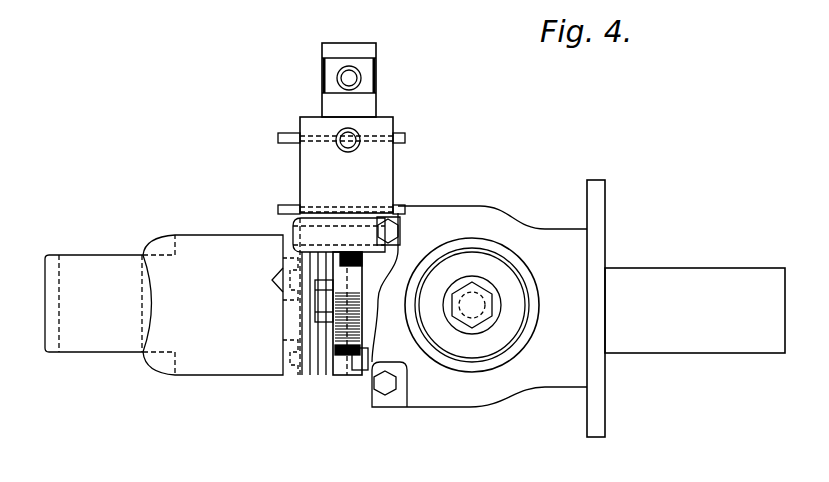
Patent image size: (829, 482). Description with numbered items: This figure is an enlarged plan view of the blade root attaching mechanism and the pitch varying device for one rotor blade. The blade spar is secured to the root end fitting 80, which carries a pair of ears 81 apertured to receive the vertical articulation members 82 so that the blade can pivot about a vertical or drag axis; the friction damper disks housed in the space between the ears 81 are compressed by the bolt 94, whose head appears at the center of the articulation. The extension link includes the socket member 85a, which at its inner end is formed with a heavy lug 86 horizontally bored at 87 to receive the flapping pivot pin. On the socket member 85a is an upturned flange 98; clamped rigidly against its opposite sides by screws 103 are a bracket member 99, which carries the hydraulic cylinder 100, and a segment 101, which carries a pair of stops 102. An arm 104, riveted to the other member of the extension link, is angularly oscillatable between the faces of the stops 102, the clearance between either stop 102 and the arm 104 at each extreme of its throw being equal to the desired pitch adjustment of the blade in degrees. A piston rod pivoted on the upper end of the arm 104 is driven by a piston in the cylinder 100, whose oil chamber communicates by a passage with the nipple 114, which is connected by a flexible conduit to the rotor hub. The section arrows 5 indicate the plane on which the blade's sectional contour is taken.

The section line 5- 5 is at (366, 26).
The nipple 114 is at (360, 78).
The hydraulic cylinder 100 is at (341, 165).
The stops 102 is at (372, 425).
The screws 103 is at (283, 262).
The socket member 85a is at (221, 296).
The lug 86 is at (47, 300).
The horizontal bore 87 is at (62, 330).
The arm 104 is at (355, 315).
The bolt 94 is at (478, 312).
The bracket member 99 is at (285, 346).
The upturned flange 98 is at (316, 375).
The segment 101 is at (332, 376).
The vertical articulation members 82 is at (496, 240).
The root end fitting 80 is at (606, 215).
The ears 81 is at (480, 397).